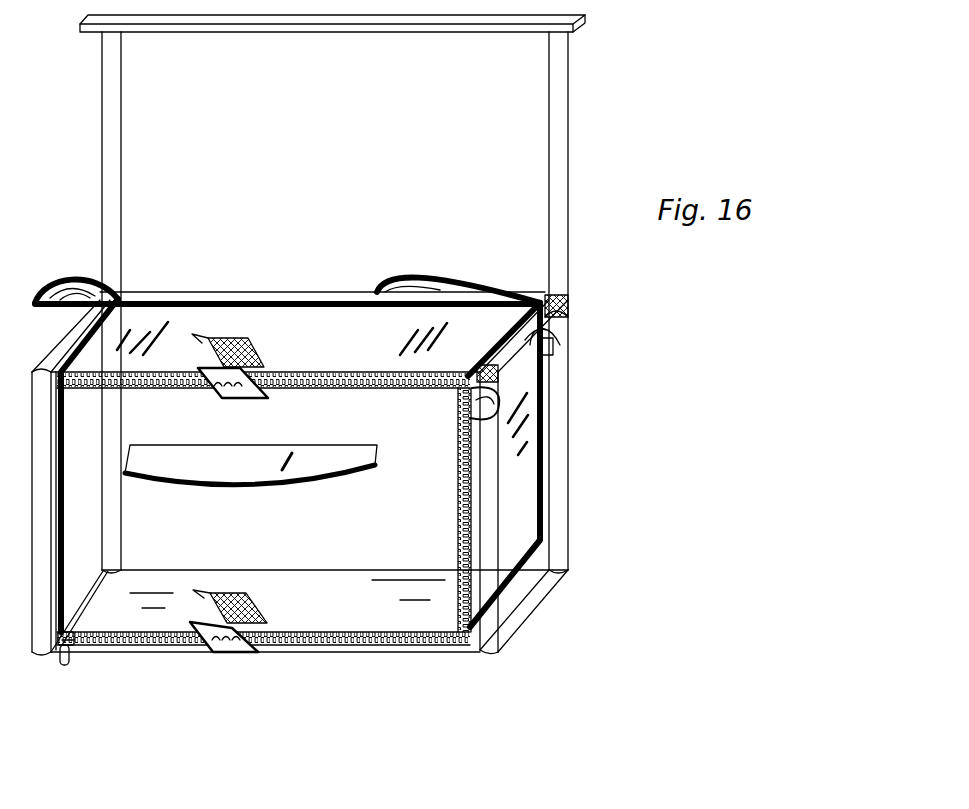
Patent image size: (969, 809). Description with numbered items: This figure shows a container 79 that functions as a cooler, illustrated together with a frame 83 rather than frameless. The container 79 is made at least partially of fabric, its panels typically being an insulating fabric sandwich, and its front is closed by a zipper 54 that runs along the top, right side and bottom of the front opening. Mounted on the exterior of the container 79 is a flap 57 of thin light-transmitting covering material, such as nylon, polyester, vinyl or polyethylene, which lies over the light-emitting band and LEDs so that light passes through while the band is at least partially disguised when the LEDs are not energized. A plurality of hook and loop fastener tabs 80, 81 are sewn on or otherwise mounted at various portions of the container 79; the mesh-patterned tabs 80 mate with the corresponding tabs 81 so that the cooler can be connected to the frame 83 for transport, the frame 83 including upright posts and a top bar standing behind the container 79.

The zipper 54 is at (314, 375).
The flap 57 is at (290, 462).
The container 79 is at (122, 617).
The hook and loop fastener tab 80 is at (488, 364).
The hook and loop fastener tab 81 is at (485, 412).
The frame 83 is at (559, 360).